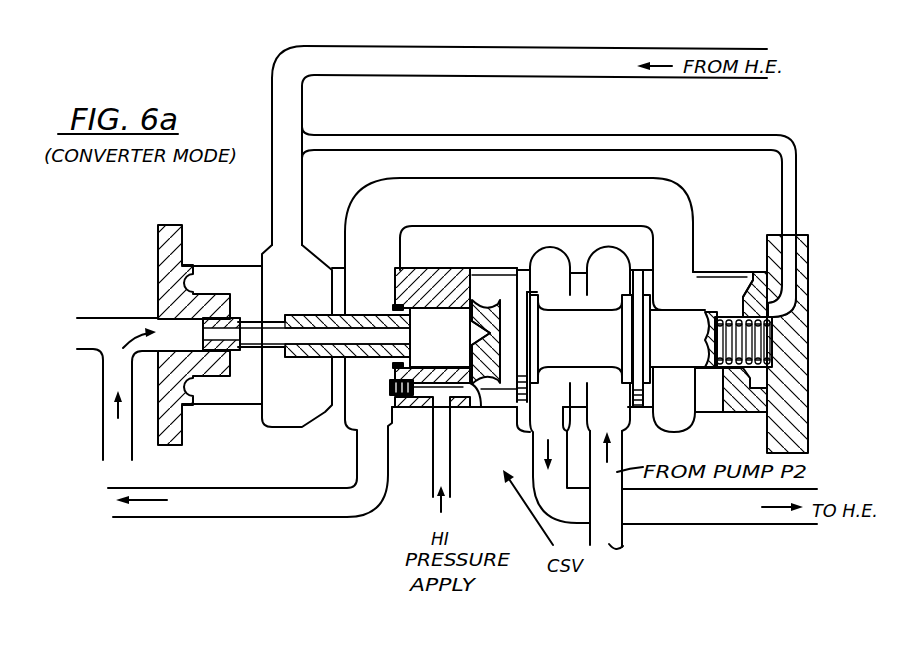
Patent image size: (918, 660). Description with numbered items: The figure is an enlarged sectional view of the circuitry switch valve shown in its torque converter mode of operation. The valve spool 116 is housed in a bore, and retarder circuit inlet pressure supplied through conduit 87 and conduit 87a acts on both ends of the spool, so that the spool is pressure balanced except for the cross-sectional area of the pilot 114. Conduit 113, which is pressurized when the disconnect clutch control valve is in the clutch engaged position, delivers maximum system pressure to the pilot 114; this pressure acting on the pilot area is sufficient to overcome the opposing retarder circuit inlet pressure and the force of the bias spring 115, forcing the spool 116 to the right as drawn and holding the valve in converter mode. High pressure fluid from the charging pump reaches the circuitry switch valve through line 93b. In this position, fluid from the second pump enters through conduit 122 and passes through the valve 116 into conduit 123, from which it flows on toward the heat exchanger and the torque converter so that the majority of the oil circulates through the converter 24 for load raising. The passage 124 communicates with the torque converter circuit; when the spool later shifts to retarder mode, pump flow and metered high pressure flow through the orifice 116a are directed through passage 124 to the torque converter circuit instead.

The conduit 87 is at (338, 17).
The conduit 87a is at (797, 193).
The passage 124 is at (508, 213).
The converter 24 is at (87, 434).
The conduit 113 is at (96, 326).
The pilot 114 is at (456, 348).
The valve spool 116 is at (590, 346).
The orifice 116a is at (484, 408).
The line 93b is at (438, 463).
The bias spring 115 is at (738, 367).
The conduit 122 is at (623, 546).
The conduit 123 is at (687, 516).